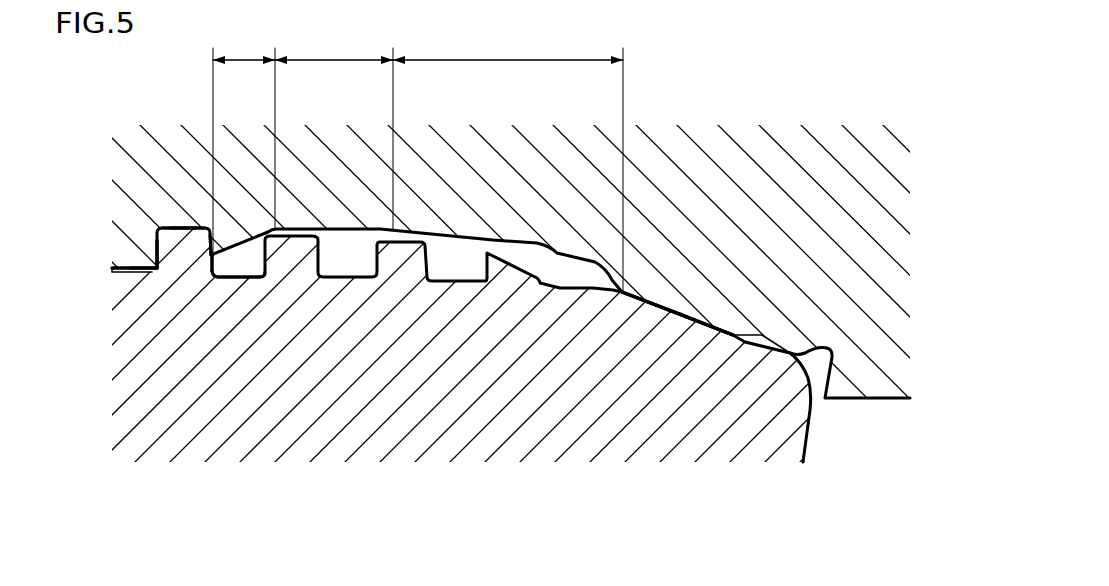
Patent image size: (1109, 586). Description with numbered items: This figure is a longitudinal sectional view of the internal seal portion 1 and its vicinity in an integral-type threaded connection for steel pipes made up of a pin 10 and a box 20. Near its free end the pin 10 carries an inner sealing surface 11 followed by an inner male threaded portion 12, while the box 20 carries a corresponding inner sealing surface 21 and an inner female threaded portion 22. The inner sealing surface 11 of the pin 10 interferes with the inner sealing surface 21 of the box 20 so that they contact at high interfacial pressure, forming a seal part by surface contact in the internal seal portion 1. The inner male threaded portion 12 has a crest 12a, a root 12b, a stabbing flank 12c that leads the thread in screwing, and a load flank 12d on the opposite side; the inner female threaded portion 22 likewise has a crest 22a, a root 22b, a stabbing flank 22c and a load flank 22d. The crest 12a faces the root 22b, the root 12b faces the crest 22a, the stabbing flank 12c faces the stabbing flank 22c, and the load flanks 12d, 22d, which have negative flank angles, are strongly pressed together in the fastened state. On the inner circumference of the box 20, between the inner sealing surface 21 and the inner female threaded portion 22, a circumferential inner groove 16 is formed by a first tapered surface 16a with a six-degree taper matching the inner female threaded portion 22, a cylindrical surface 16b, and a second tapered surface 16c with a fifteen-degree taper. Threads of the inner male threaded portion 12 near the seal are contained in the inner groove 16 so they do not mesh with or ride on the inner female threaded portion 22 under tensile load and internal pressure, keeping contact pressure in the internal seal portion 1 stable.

The internal seal portion 1 is at (618, 513).
The pin 10 is at (744, 479).
The inner sealing surface 11 is at (668, 293).
The inner male threaded portion 12 is at (285, 294).
The crest 12a is at (178, 229).
The root 12b is at (155, 267).
The stabbing flank 12c is at (211, 273).
The load flank 12d is at (155, 260).
The inner groove 16 is at (336, 243).
The first tapered surface 16a is at (508, 162).
The cylindrical surface 16b is at (334, 130).
The second tapered surface 16c is at (244, 143).
The box 20 is at (772, 110).
The inner sealing surface 21 is at (668, 293).
The inner female threaded portion 22 is at (183, 207).
The crest 22a is at (158, 270).
The root 22b is at (195, 272).
The stabbing flank 22c is at (204, 268).
The load flank 22d is at (157, 263).